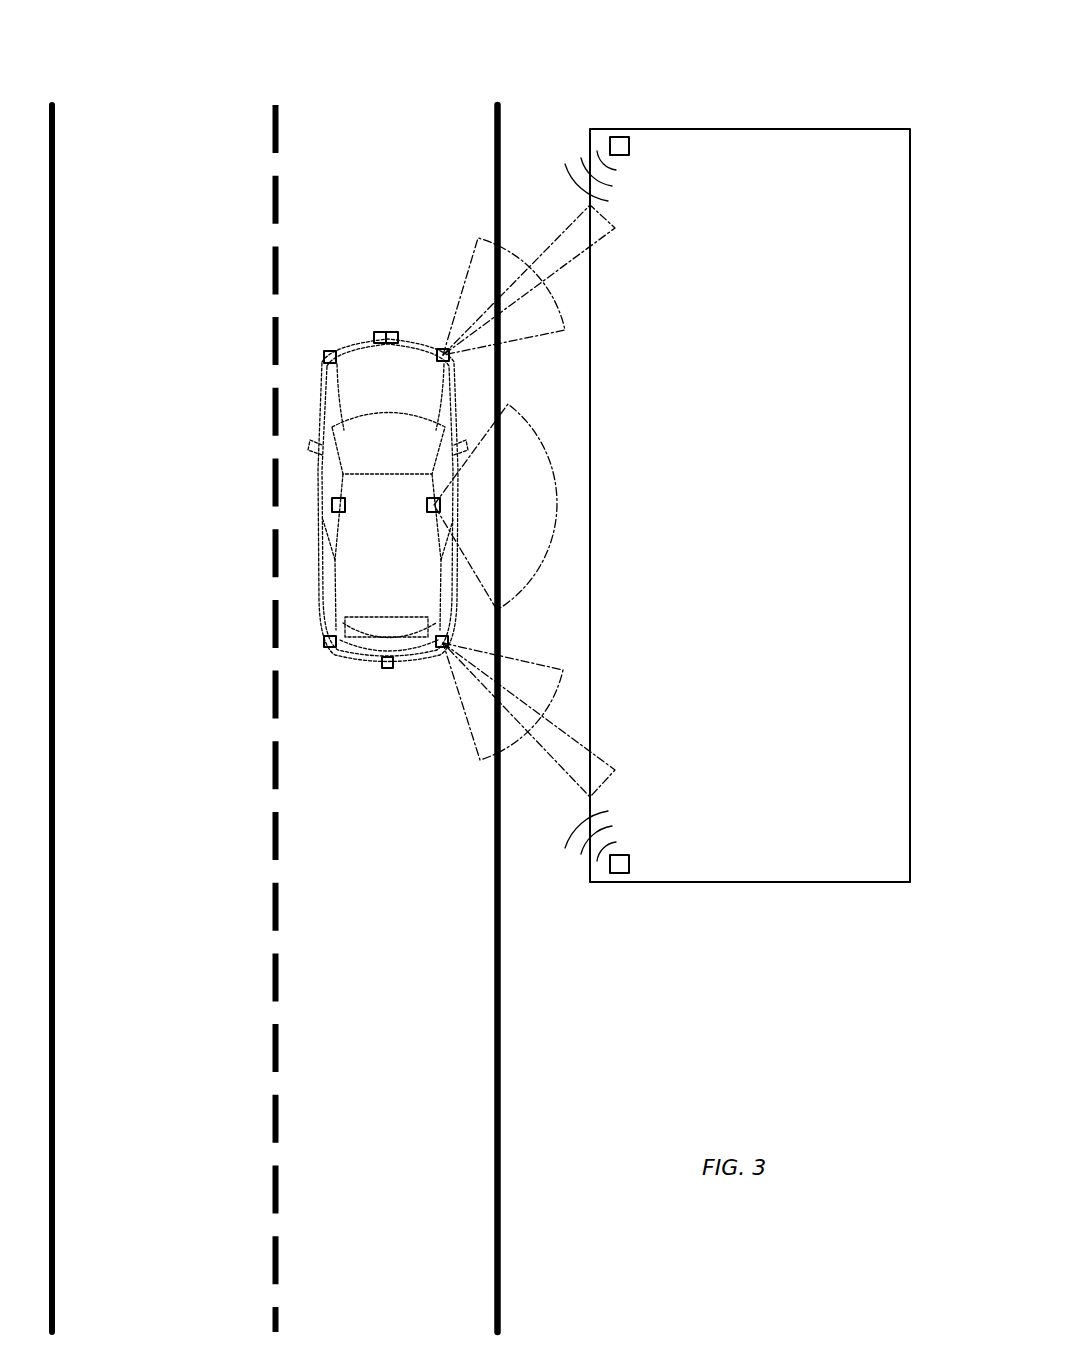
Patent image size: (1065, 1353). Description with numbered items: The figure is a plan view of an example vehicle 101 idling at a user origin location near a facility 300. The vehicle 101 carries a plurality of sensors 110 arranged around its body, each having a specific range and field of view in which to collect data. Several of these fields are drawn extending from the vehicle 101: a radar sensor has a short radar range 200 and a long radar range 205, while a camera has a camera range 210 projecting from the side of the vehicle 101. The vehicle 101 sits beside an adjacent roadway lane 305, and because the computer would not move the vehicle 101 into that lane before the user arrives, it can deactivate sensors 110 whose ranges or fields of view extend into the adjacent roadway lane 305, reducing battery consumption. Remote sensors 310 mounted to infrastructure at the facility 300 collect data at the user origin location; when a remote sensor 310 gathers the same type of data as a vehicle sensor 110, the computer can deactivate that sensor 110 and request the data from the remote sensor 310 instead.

The vehicle 101 is at (345, 236).
The sensors 110 is at (324, 355).
The short radar range 200 is at (482, 272).
The long radar range 205 is at (563, 237).
The camera range 210 is at (532, 472).
The facility 300 is at (858, 128).
The adjacent roadway lane 305 is at (160, 155).
The remote sensors 310 is at (630, 147).